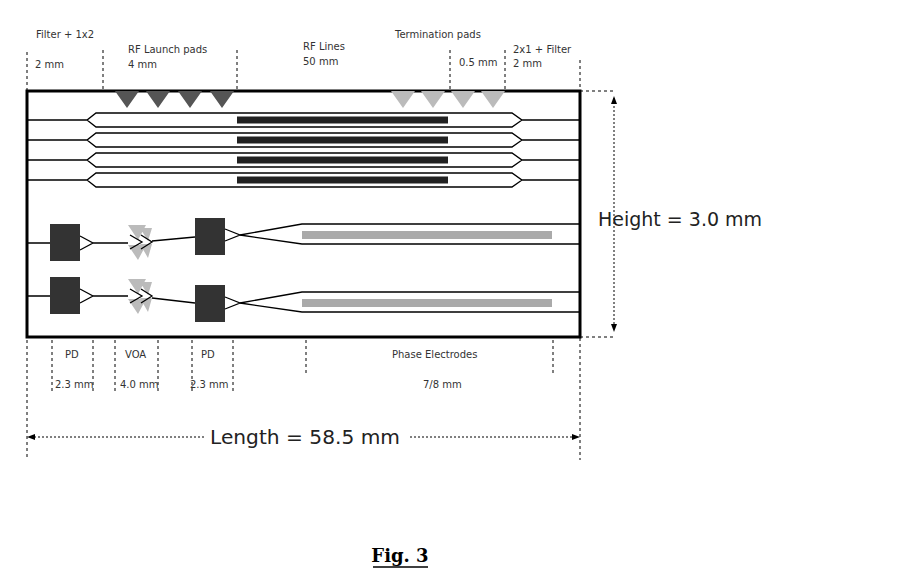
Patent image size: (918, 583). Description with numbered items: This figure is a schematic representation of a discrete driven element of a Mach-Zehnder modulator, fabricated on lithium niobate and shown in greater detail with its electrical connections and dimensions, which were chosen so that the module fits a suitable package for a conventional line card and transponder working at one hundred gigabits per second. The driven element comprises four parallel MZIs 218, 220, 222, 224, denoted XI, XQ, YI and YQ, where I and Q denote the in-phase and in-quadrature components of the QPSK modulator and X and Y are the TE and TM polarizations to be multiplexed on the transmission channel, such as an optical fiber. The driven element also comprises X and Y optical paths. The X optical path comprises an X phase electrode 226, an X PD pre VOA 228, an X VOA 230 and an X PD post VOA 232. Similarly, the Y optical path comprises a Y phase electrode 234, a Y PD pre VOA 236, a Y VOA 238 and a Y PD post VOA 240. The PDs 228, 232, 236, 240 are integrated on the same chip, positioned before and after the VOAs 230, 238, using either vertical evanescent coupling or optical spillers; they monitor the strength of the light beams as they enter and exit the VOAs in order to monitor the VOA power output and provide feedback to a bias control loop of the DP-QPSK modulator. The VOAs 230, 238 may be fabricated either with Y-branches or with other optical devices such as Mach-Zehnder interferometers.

The MZI 218 is at (165, 117).
The MZI 220 is at (217, 140).
The MZI 222 is at (275, 147).
The MZI 224 is at (420, 173).
The X phase electrode 226 is at (432, 240).
The X PD pre VOA 228 is at (225, 248).
The X VOA 230 is at (152, 247).
The X PD post VOA 232 is at (77, 252).
The Y phase electrode 234 is at (373, 312).
The Y PD pre VOA 236 is at (213, 315).
The Y VOA 238 is at (148, 315).
The Y PD post VOA 240 is at (72, 308).